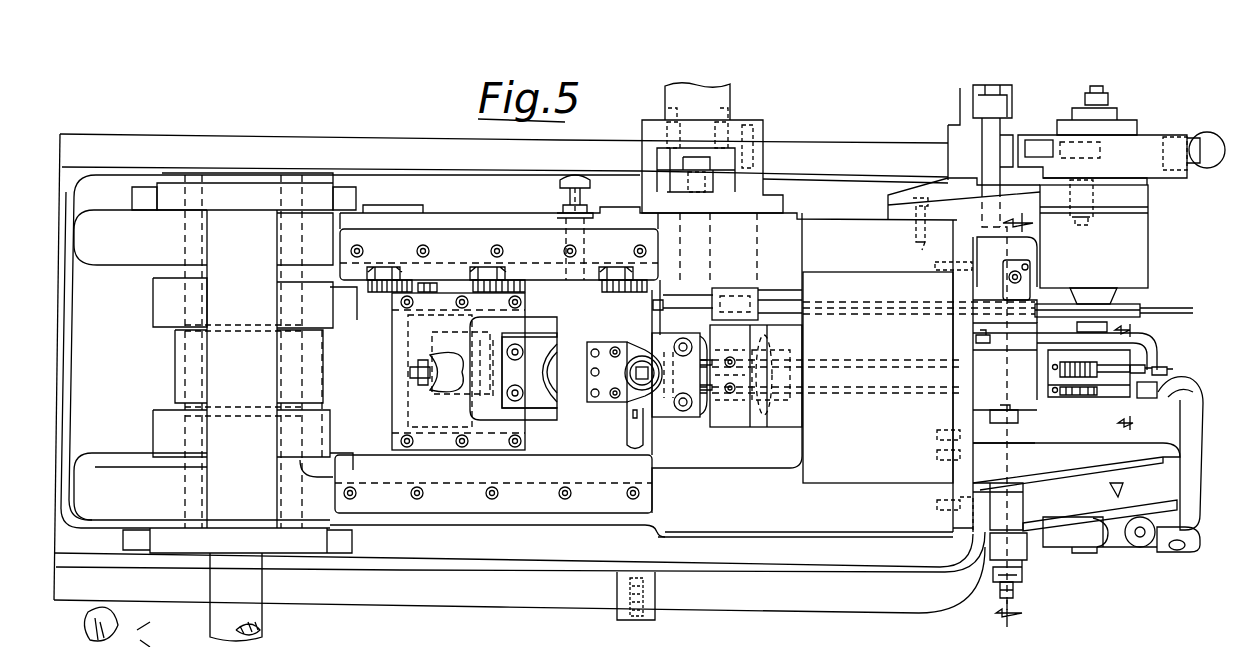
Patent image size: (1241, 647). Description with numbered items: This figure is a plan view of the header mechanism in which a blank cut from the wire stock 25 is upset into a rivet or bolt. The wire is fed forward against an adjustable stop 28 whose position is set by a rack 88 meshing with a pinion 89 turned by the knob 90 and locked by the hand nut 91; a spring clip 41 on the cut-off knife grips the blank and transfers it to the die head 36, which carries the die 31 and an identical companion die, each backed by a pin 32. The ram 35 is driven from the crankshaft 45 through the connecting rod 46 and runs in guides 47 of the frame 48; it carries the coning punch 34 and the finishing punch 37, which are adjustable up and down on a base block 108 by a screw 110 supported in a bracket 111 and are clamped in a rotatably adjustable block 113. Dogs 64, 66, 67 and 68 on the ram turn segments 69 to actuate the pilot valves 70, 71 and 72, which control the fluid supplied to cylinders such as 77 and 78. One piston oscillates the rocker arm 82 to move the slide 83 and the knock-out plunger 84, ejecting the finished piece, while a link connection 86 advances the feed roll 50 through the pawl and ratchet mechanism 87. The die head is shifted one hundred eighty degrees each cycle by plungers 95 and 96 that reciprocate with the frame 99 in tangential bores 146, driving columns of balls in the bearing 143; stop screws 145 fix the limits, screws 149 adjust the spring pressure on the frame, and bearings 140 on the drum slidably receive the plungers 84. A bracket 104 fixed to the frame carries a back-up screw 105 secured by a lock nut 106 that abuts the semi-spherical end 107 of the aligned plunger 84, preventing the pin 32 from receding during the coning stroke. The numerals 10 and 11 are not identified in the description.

The adjusting direction arrow 10 is at (1125, 383).
The center line / reference direction 11 is at (1013, 418).
The wire stock 25 is at (1178, 300).
The stop 28 is at (655, 312).
The die 31 is at (735, 356).
The pin 32 is at (768, 360).
The coning punch 34 is at (700, 302).
The ram 35 is at (596, 470).
The die head 36 is at (776, 430).
The finishing punch 37 is at (704, 416).
The spring clip 41 is at (726, 305).
The crankshaft 45 is at (256, 625).
The connecting rod 46 is at (373, 405).
The guides 47 is at (525, 485).
The frame 48 is at (565, 560).
The feed roll 50 is at (1130, 302).
The dog 64 is at (648, 288).
The dog 66 is at (540, 260).
The dog 67 is at (450, 258).
The dog 68 is at (400, 292).
The segments 69 is at (335, 283).
The pilot valve 70 is at (612, 266).
The pilot valve 71 is at (482, 262).
The pilot valve 72 is at (382, 262).
The cylinder 77 is at (973, 105).
The cylinder 78 is at (728, 98).
The rocker arm 82 is at (1190, 442).
The slide 83 is at (1200, 396).
The plunger 84 is at (1095, 374).
The link connection 86 is at (1123, 538).
The pawl and ratchet mechanism 87 is at (1150, 140).
The rack 88 is at (598, 317).
The pinion 89 is at (557, 318).
The knob 90 is at (574, 178).
The hand nut 91 is at (570, 195).
The plunger 95 is at (1012, 530).
The plunger 96 is at (975, 130).
The frame 99 is at (1022, 564).
The bracket 104 is at (1160, 350).
The back-up screw 105 is at (1175, 370).
The lock nut 106 is at (1153, 362).
The semi-spherical end 107 is at (1128, 390).
The base block 108 is at (640, 412).
The screw 110 is at (634, 372).
The bracket 111 is at (607, 403).
The block 113 is at (683, 418).
The bearings 140 is at (1072, 373).
The bearing 143 is at (990, 382).
The stop screws 145 is at (975, 338).
The bores 146 is at (977, 242).
The screws 149 is at (1015, 593).